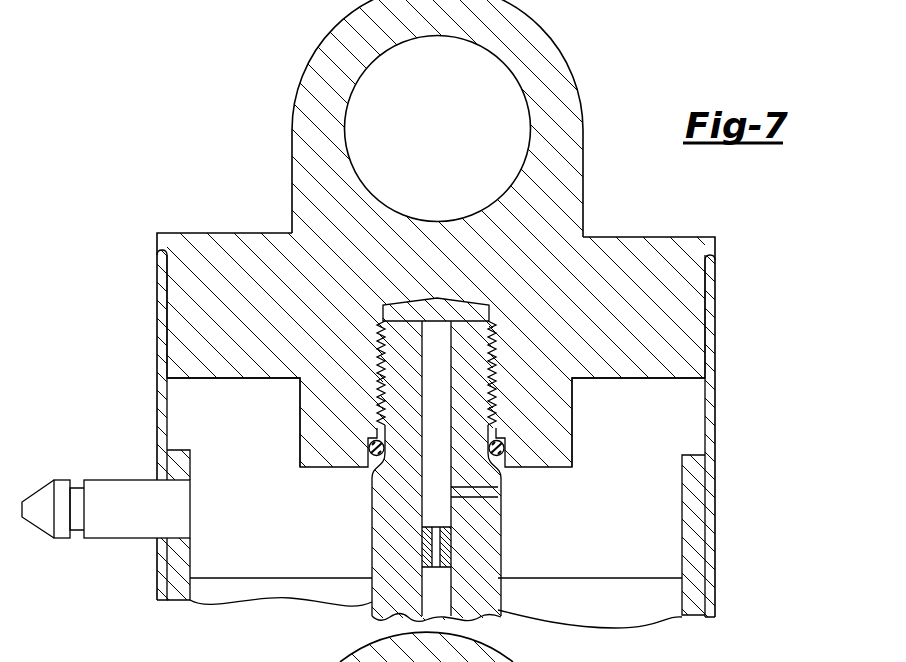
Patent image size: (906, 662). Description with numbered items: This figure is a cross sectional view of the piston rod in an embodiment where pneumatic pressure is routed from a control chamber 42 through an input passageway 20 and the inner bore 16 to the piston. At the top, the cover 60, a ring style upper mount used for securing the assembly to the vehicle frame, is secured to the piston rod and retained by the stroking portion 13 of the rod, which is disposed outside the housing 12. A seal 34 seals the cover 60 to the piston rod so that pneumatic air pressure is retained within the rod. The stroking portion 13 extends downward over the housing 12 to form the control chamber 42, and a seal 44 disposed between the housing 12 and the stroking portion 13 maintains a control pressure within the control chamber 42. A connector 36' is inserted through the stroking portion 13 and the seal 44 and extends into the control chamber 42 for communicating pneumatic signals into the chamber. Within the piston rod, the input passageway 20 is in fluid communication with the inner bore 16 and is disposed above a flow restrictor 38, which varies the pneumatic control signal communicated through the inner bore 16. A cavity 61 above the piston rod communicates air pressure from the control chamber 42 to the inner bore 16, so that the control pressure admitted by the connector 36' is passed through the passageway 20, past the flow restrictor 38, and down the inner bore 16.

The housing 12 is at (585, 610).
The stroking portion 13 is at (165, 292).
The inner bore 16 is at (440, 598).
The input passageway 20 is at (497, 492).
The seal 34 is at (504, 455).
The connector 36' is at (106, 492).
The flow restrictor 38 is at (445, 545).
The control chamber 42 is at (183, 397).
The seal 44 is at (180, 565).
The cover 60 is at (582, 184).
The cavity 61 is at (424, 307).